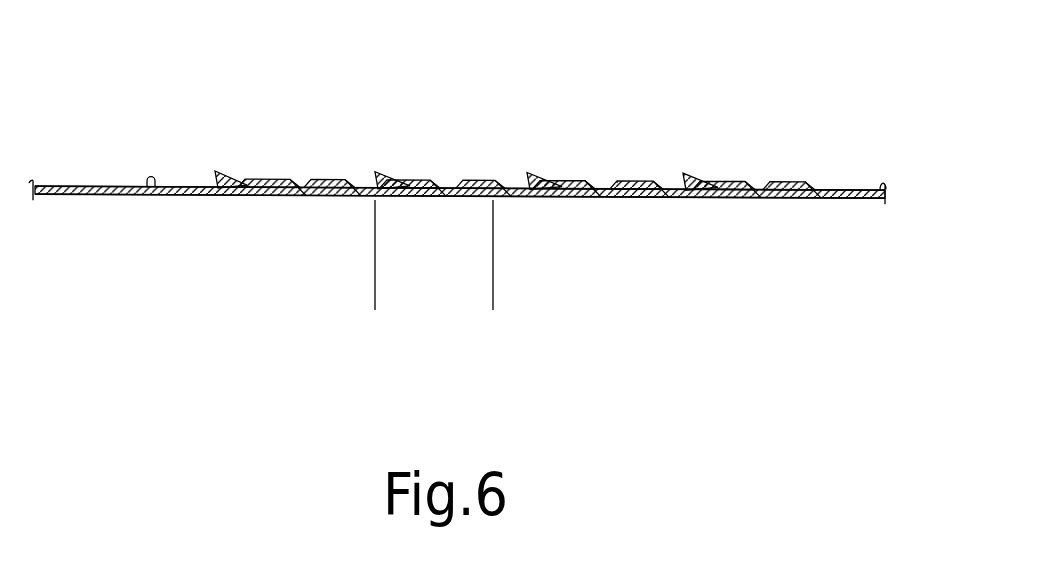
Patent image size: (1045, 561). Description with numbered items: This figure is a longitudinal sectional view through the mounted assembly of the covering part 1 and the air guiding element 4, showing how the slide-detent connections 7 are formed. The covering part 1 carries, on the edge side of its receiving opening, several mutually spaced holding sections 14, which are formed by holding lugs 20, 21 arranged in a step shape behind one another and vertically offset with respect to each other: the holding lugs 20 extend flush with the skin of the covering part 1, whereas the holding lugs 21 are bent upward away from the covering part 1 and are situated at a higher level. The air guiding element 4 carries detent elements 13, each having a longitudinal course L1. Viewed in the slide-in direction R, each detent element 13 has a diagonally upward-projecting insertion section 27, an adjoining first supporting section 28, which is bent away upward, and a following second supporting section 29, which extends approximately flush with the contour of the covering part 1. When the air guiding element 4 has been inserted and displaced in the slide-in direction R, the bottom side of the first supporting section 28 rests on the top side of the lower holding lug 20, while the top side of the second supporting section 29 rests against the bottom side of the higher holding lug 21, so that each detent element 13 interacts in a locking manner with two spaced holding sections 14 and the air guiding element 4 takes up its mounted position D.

The covering part 1 is at (55, 182).
The air guiding element 4 is at (255, 180).
The slide-detent connection 7 is at (510, 168).
The detent element 13 is at (421, 171).
The holding section 14 is at (213, 196).
The holding lug 20 is at (707, 195).
The holding lug 21 is at (616, 178).
The insertion section 27 is at (690, 178).
The first supporting section 28 is at (725, 180).
The second supporting section 29 is at (778, 200).
The mounted position D is at (296, 179).
The slide-in direction R is at (780, 120).
The longitudinal course L1 is at (375, 282).